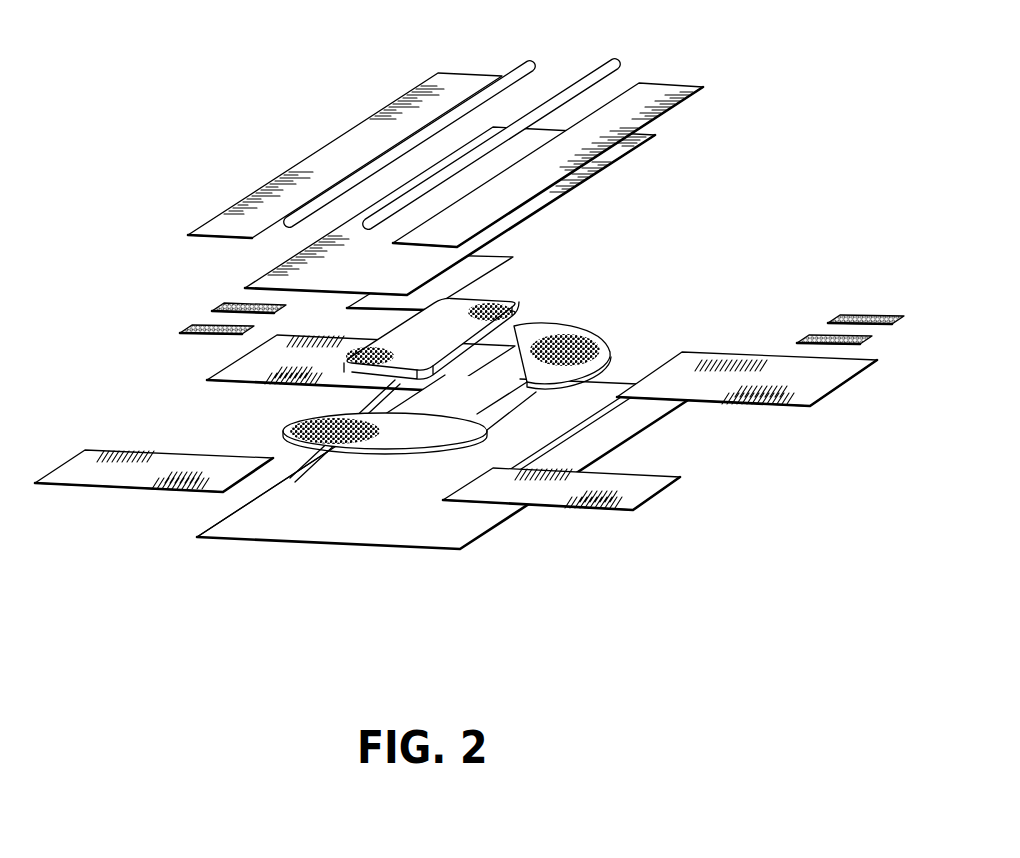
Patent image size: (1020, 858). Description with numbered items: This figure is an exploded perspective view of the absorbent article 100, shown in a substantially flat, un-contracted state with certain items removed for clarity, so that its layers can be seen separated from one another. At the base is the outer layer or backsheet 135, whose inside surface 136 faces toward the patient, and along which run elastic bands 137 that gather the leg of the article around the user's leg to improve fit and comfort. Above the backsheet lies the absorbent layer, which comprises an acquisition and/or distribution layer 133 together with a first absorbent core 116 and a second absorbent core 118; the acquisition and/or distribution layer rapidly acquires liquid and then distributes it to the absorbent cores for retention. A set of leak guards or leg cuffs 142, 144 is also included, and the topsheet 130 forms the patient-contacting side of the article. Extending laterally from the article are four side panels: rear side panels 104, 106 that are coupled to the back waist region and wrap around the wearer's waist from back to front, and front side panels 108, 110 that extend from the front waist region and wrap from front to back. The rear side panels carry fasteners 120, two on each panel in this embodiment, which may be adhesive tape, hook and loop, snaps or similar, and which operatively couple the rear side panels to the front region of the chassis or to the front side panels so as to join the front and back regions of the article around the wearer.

The absorbent article 100 is at (206, 85).
The rear side panel 104 is at (835, 388).
The rear side panel 106 is at (207, 373).
The front side panel 108 is at (62, 450).
The front side panel 110 is at (650, 497).
The first absorbent core 116 is at (578, 330).
The second absorbent core 118 is at (400, 376).
The fasteners 120 is at (217, 303).
The topsheet 130 is at (263, 272).
The acquisition and/or distribution layer 133 is at (513, 267).
The backsheet 135 is at (200, 533).
The inside surface 136 is at (347, 527).
The elastic bands 137 is at (293, 480).
The leg cuff 142 is at (337, 140).
The leg cuff 144 is at (677, 110).